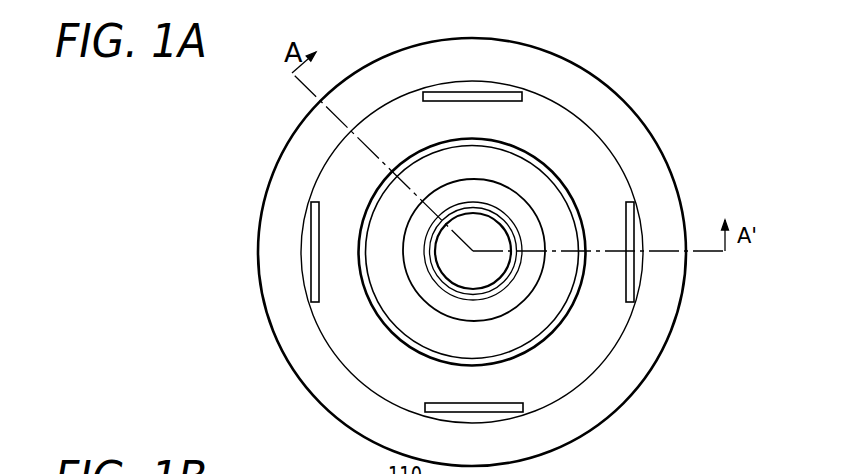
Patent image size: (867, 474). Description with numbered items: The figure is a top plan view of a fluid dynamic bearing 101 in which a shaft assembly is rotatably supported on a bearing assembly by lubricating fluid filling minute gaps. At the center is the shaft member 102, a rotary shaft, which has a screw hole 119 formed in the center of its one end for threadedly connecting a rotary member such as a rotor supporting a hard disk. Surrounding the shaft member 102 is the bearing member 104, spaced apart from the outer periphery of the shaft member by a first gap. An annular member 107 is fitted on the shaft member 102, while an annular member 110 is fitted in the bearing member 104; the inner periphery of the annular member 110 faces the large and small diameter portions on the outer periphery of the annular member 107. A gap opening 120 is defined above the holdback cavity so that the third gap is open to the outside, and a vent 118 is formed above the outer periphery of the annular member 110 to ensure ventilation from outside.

The fluid dynamic bearing 101 is at (509, 254).
The shaft member 102 is at (513, 298).
The bearing member 104 is at (530, 435).
The annular member on the shaft member 107 is at (525, 160).
The annular member on the bearing member 110 is at (613, 185).
The vent 118 is at (638, 210).
The screw hole 119 is at (478, 265).
The gap opening 120 is at (568, 178).